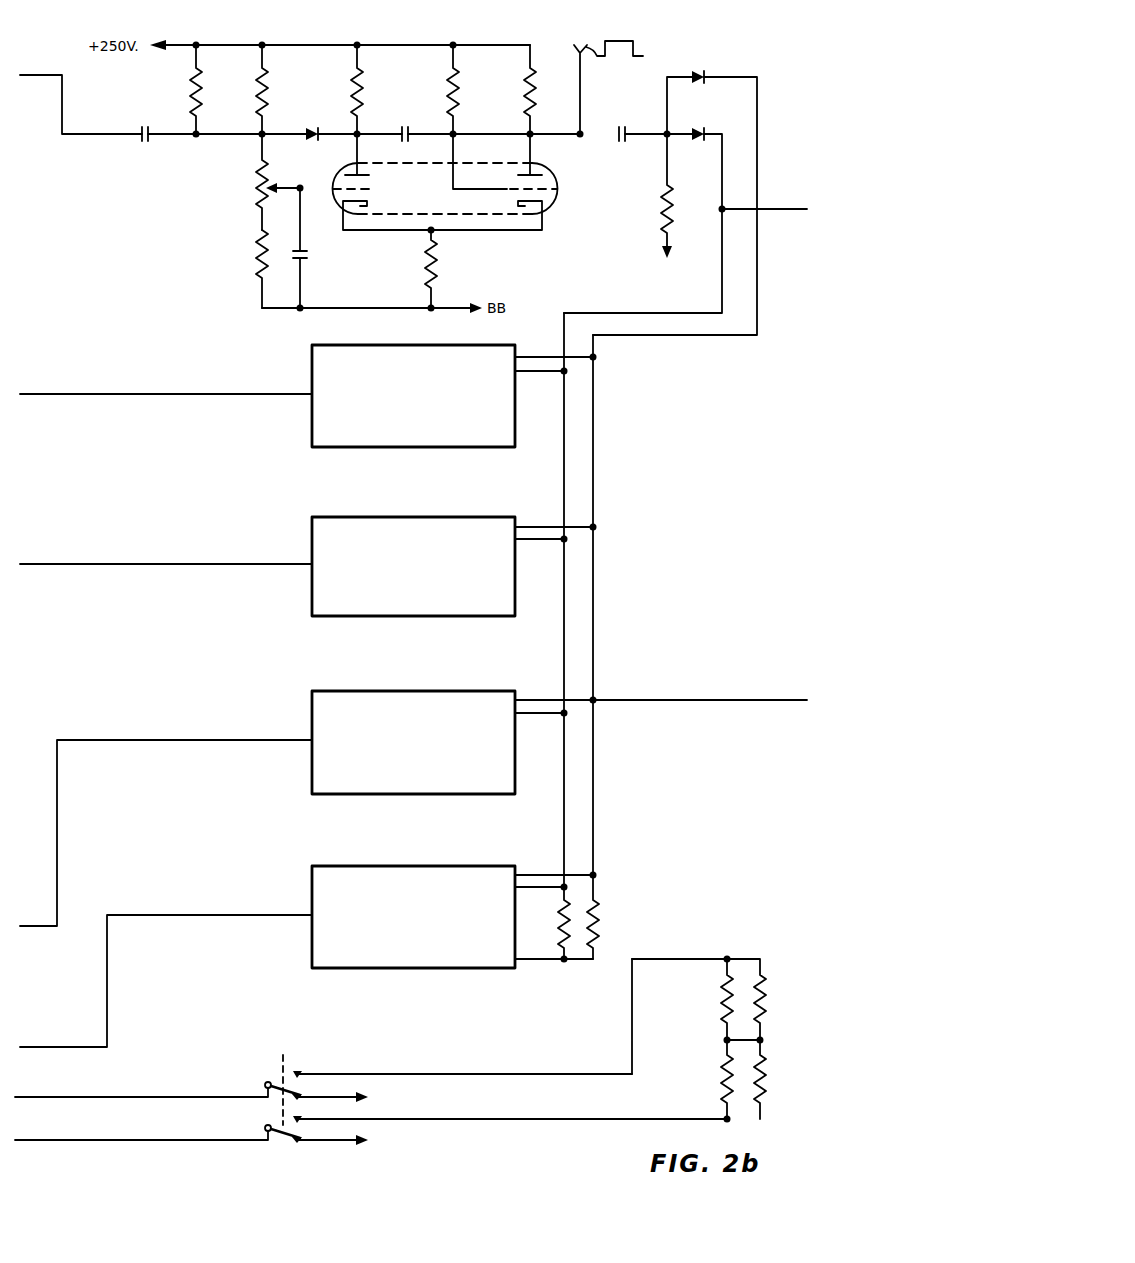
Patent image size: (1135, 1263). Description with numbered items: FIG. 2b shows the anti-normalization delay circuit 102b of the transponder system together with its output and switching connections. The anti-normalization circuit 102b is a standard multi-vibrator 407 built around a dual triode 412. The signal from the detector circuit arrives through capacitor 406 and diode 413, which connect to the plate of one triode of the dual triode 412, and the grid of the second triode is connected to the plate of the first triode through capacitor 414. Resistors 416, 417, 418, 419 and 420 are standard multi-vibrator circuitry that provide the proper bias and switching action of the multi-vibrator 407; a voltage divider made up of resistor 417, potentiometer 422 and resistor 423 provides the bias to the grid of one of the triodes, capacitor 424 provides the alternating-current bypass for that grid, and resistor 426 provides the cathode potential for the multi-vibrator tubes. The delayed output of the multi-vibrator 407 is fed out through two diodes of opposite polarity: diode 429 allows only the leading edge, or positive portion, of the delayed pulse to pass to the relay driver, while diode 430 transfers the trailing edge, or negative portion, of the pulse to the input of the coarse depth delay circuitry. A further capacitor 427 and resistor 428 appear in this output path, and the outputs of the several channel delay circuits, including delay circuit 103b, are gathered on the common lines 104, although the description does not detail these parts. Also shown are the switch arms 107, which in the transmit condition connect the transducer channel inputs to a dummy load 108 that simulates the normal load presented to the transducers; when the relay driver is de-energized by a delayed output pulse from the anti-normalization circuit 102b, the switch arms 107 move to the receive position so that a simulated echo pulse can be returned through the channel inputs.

The capacitor 406 is at (143, 130).
The resistor 416 is at (202, 102).
The resistor 417 is at (272, 107).
The diode 413 is at (312, 126).
The resistor 418 is at (365, 107).
The capacitor 414 is at (410, 130).
The resistor 419 is at (462, 108).
The resistor 420 is at (526, 72).
The dual triode 412 is at (472, 160).
The potentiometer 422 is at (258, 194).
The resistor 423 is at (256, 252).
The capacitor 424 is at (306, 260).
The resistor 426 is at (437, 286).
The multi-vibrator 407 is at (530, 238).
The capacitor 427 is at (627, 128).
The diode 430 is at (699, 72).
The diode 429 is at (698, 140).
The resistor 428 is at (672, 207).
The bus lines 104 is at (618, 656).
The anti-normalization delay circuit 102b is at (312, 430).
The channel 3-6 delay 103b is at (312, 599).
The dummy load 108 is at (766, 952).
The switch arm 107 is at (290, 1140).